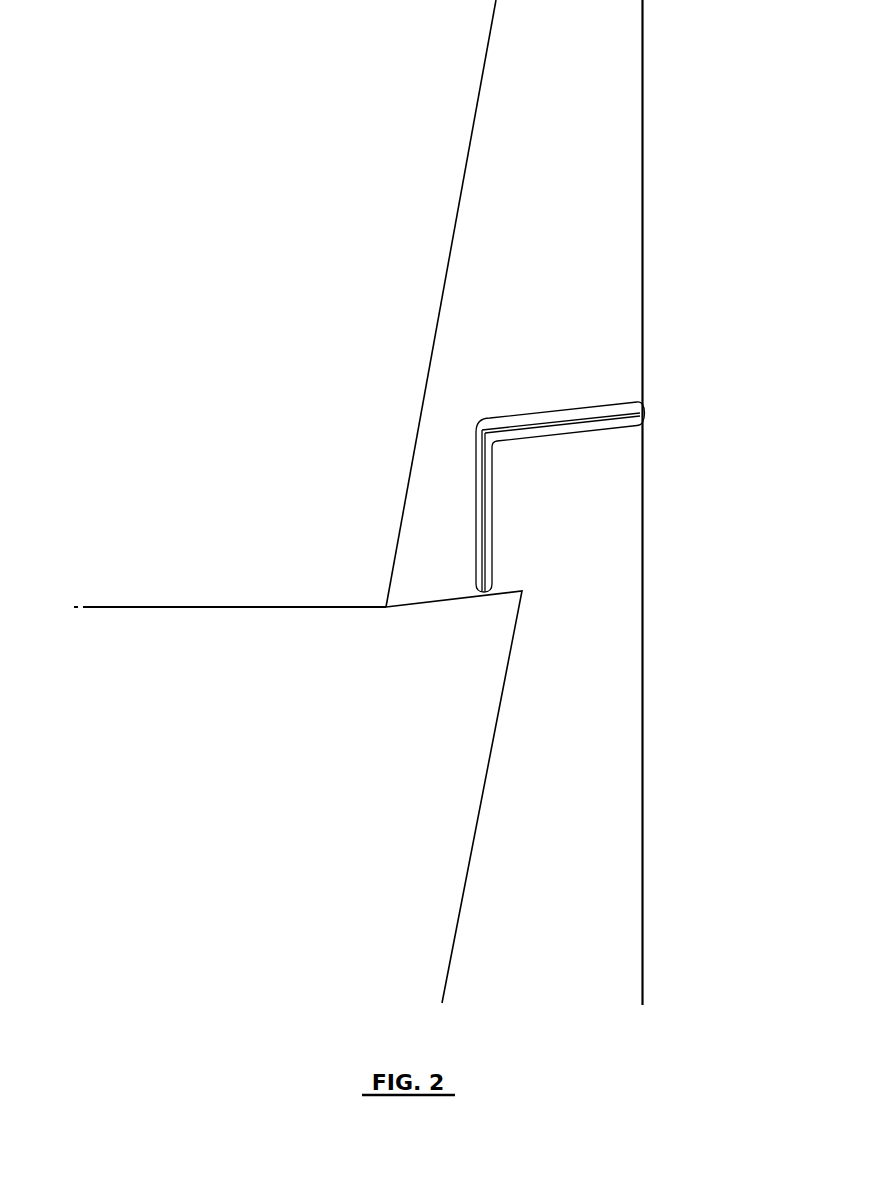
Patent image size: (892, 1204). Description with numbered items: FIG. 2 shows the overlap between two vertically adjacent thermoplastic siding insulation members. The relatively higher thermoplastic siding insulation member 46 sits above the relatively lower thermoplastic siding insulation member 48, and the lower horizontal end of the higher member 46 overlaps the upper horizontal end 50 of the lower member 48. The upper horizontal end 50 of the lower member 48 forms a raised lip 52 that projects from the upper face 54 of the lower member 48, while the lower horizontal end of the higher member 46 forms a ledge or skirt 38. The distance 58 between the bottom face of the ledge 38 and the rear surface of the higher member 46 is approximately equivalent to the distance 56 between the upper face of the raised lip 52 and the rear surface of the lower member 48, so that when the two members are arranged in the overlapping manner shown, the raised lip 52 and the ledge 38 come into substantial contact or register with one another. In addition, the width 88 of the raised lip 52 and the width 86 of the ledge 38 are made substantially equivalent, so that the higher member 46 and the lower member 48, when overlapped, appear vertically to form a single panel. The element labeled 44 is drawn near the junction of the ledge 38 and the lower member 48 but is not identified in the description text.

The ledge 38 is at (420, 478).
The door panel lower wall 44 is at (393, 610).
The relatively higher thermoplastic siding insulation member 46 is at (632, 209).
The relatively lower thermoplastic siding insulation member 48 is at (630, 908).
The upper horizontal end 50 is at (630, 582).
The raised lip 52 is at (500, 473).
The upper face 54 is at (483, 788).
The distance 56 is at (638, 428).
The distance 58 is at (638, 402).
The width 86 is at (475, 430).
The width 88 is at (490, 445).